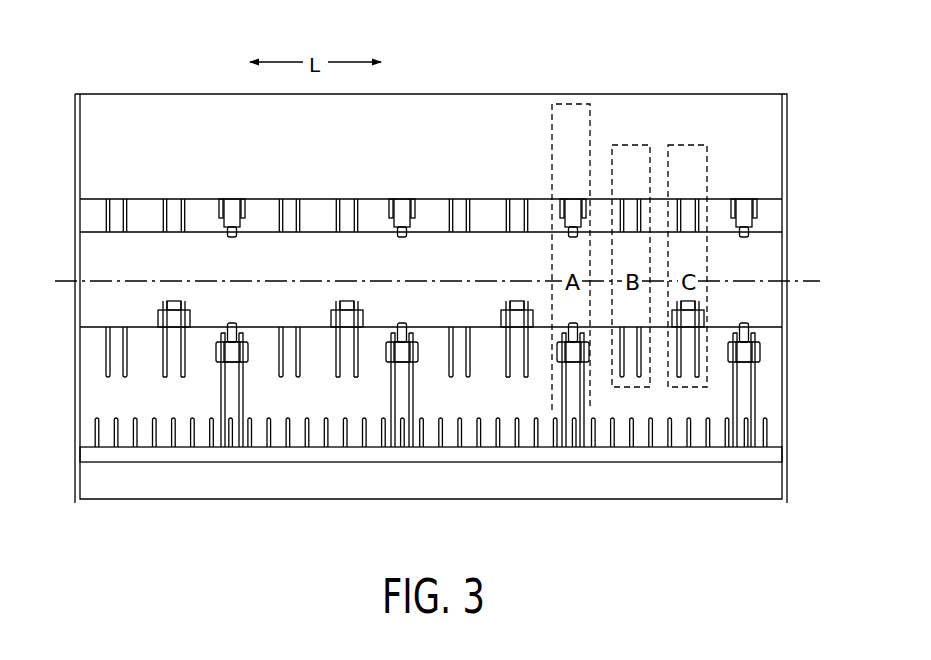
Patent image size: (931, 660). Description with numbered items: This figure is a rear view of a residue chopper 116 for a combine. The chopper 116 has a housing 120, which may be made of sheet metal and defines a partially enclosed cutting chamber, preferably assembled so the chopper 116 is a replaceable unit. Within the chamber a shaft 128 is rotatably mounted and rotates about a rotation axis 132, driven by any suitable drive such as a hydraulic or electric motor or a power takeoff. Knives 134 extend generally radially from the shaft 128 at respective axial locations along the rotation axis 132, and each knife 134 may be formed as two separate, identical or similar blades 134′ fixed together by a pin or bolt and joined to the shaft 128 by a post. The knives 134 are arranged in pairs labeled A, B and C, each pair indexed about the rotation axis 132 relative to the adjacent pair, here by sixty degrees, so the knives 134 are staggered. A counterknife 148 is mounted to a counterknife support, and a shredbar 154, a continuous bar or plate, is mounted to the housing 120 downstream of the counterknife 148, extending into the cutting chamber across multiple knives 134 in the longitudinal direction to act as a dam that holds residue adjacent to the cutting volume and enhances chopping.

The chopper 116 is at (683, 42).
The housing 120 is at (170, 108).
The rotation axis 132 is at (803, 281).
The shaft 128 is at (767, 298).
The knives 134 is at (328, 385).
The blade 134′ is at (391, 391).
The counterknife 148 is at (500, 432).
The shredbar 154 is at (659, 455).